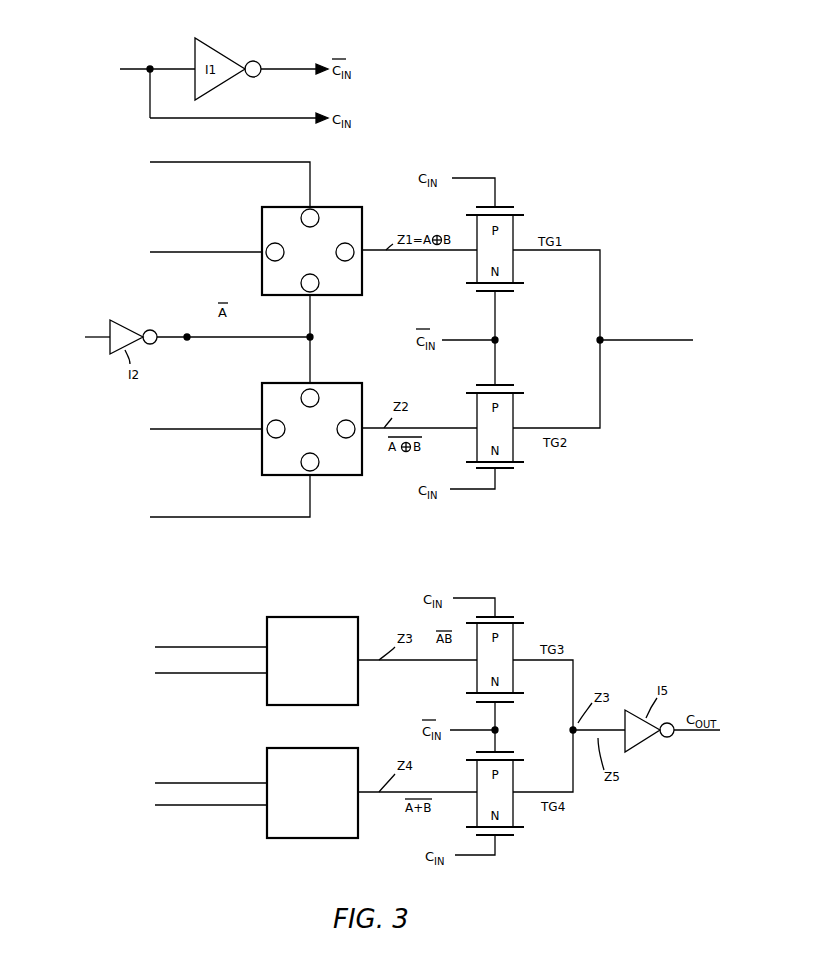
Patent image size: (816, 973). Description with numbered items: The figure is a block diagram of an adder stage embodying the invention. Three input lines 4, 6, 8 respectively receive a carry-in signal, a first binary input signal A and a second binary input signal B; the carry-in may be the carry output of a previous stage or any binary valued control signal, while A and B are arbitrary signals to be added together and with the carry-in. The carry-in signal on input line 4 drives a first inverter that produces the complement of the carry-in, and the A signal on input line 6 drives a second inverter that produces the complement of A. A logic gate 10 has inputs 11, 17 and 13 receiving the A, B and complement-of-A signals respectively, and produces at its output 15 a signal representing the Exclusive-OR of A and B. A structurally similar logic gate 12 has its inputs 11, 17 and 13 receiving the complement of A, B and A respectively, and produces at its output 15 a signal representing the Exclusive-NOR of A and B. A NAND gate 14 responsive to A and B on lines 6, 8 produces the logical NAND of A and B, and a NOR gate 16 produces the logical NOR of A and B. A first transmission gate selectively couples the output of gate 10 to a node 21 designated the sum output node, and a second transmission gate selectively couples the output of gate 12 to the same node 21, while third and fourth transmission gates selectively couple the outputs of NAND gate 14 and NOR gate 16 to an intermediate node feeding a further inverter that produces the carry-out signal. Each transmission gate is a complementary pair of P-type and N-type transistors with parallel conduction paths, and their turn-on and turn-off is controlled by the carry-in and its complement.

The input line 4 is at (138, 66).
The input line 6 is at (199, 161).
The input line 8 is at (199, 247).
The logic gate 10 is at (345, 210).
The input 11 is at (310, 308).
The logic gate 12 is at (347, 387).
The input 13 is at (310, 372).
The NAND gate 14 is at (340, 620).
The output 15 is at (345, 340).
The NOR gate 16 is at (340, 750).
The input 17 is at (275, 340).
The node 21 is at (594, 344).